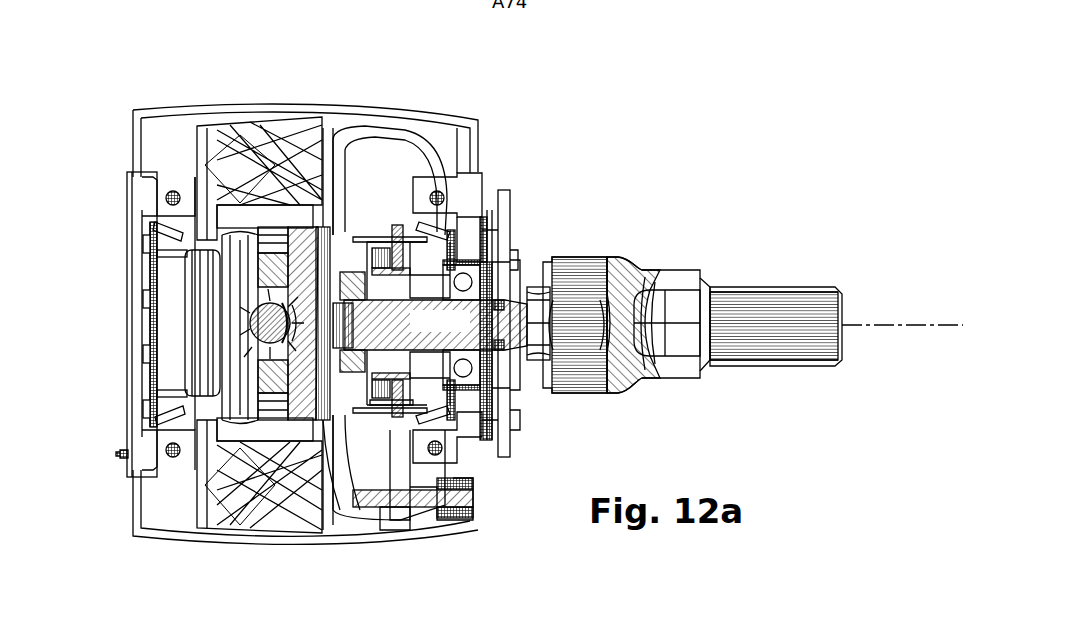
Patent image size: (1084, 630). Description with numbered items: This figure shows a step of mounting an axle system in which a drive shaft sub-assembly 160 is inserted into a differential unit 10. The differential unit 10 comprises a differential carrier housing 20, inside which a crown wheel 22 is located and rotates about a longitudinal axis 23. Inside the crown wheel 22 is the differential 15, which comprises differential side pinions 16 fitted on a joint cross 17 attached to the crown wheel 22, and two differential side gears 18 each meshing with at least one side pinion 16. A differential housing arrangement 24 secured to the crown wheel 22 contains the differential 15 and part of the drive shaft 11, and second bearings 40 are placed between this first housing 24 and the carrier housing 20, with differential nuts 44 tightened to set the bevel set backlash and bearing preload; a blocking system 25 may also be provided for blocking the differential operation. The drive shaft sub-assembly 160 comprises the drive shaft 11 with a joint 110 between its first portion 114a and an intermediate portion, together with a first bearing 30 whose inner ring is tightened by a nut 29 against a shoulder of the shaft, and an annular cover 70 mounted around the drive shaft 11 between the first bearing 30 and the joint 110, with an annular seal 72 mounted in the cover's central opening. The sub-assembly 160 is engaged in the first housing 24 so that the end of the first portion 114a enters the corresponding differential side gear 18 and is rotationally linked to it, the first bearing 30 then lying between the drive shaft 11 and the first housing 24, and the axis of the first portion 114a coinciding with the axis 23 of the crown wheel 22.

The differential unit 10 is at (66, 97).
The differential carrier housing 20 is at (162, 110).
The crown wheel 22 is at (207, 122).
The differential side pinions 16 is at (255, 130).
The joint cross 17 is at (340, 225).
The differential side gears 18 is at (400, 200).
The differential nuts 44 is at (140, 222).
The second bearing 40 is at (142, 243).
The differential 15 is at (210, 517).
The first portion of the drive shaft 114a is at (433, 322).
The nut 29 is at (455, 520).
The annular cover 70 is at (505, 205).
The annular seal 72 is at (525, 388).
The first bearing 30 is at (512, 432).
The drive shaft sub-assembly 160 is at (722, 247).
The joint 110 is at (600, 405).
The drive shaft 11 is at (800, 290).
The longitudinal axis of the crown wheel 23 is at (933, 327).
The differential housing arrangement 24 is at (338, 472).
The blocking system 25 is at (373, 435).